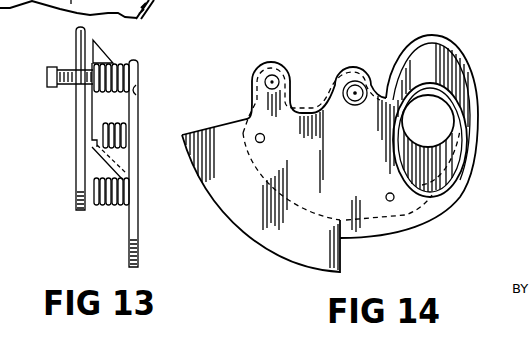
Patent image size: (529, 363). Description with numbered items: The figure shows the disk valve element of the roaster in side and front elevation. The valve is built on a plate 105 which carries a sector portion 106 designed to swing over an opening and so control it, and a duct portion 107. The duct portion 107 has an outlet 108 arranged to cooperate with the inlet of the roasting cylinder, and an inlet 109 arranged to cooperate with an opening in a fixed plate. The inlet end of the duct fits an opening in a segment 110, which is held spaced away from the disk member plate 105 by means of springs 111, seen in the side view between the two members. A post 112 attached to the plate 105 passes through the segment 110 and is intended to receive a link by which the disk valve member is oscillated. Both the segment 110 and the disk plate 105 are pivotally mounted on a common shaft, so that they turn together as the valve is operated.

In FIG. 13, the plate 105 is at (97, 232).
In FIG. 14, the plate 105 is at (442, 217).
In FIG. 13, the sector portion 106 is at (133, 250).
In FIG. 14, the sector portion 106 is at (261, 239).
In FIG. 13, the duct portion 107 is at (108, 62).
In FIG. 14, the duct portion 107 is at (445, 123).
In FIG. 13, the outlet 108 is at (137, 91).
In FIG. 14, the outlet 108 is at (458, 181).
In FIG. 13, the inlet 109 is at (92, 134).
In FIG. 14, the inlet 109 is at (446, 70).
In FIG. 13, the segment 110 is at (76, 184).
In FIG. 14, the segment 110 is at (433, 38).
In FIG. 13, the springs 111 is at (126, 80).
In FIG. 13, the post 112 is at (70, 86).
In FIG. 14, the post 112 is at (274, 79).